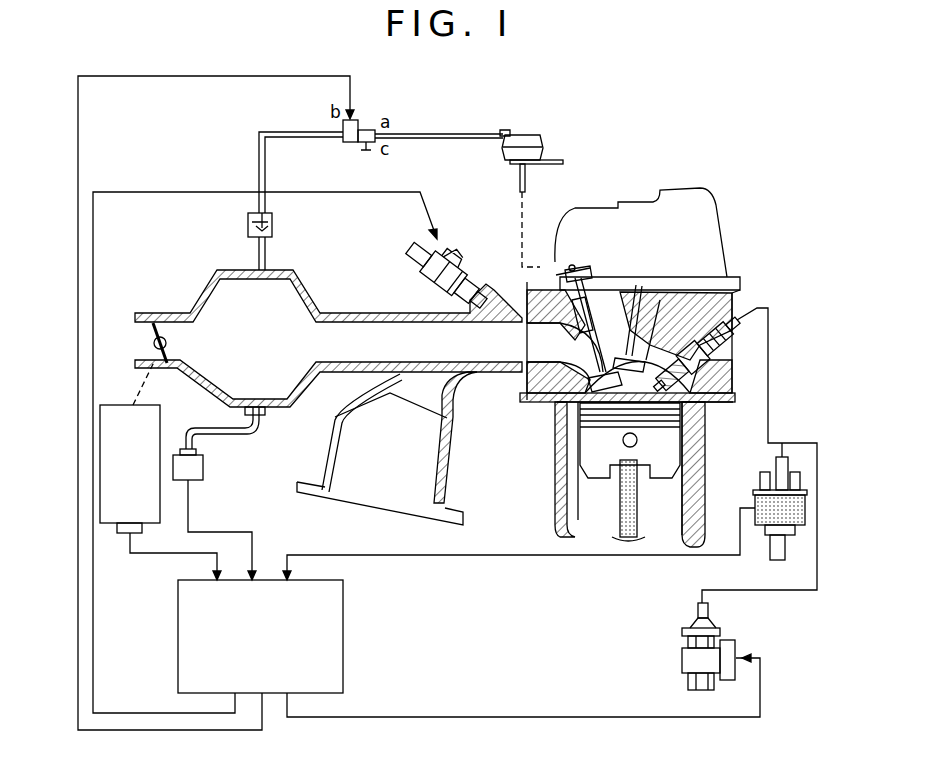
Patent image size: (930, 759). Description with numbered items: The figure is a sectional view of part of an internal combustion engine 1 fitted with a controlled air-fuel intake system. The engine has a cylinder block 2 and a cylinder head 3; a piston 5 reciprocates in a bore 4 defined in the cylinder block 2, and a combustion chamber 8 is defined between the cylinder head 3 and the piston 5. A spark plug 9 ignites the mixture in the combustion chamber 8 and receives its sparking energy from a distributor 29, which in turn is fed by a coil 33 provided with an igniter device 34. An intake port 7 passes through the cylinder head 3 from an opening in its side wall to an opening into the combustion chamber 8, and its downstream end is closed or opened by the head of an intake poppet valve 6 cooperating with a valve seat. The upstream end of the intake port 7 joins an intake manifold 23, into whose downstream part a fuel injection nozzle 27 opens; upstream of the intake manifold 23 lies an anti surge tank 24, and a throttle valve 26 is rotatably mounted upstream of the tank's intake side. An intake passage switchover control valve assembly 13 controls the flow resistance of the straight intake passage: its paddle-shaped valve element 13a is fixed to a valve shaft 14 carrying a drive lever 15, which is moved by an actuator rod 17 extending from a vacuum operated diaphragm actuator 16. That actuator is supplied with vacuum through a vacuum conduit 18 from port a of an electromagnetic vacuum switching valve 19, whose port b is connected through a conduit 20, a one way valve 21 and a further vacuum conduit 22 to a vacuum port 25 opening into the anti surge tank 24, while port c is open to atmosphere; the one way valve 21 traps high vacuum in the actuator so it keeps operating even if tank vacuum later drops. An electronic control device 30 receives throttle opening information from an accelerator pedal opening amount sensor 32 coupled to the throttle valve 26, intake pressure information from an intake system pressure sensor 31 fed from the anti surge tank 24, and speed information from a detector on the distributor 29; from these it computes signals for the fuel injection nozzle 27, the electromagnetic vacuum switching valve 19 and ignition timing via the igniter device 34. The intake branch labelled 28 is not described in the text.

The internal combustion engine 1 is at (640, 367).
The cylinder block 2 is at (706, 470).
The cylinder head 3 is at (715, 390).
The bore 4 is at (575, 455).
The piston 5 is at (606, 455).
The intake poppet valve 6 is at (655, 335).
The intake port 7 is at (545, 358).
The combustion chamber 8 is at (637, 478).
The spark plug 9 is at (728, 341).
The intake passage switchover control valve assembly 13 is at (616, 280).
The valve element 13a is at (628, 312).
The valve shaft 14 is at (594, 300).
The drive lever 15 is at (577, 262).
The vacuum operated diaphragm actuator 16 is at (535, 135).
The actuator rod 17 is at (527, 186).
The vacuum conduit 18 is at (433, 132).
The electromagnetic vacuum switching valve 19 is at (346, 143).
The conduit 20 is at (266, 177).
The one way valve 21 is at (272, 220).
The vacuum conduit 22 is at (266, 257).
The intake manifold 23 is at (403, 312).
The anti surge tank 24 is at (302, 292).
The vacuum port 25 is at (273, 287).
The throttle valve 26 is at (160, 318).
The fuel injection nozzle 27 is at (460, 266).
The intake manifold branch 28 is at (450, 466).
The distributor 29 is at (770, 528).
The electronic control device 30 is at (345, 636).
The intake system pressure sensor 31 is at (203, 467).
The accelerator pedal opening amount sensor 32 is at (160, 421).
The coil 33 is at (688, 641).
The igniter device 34 is at (728, 640).